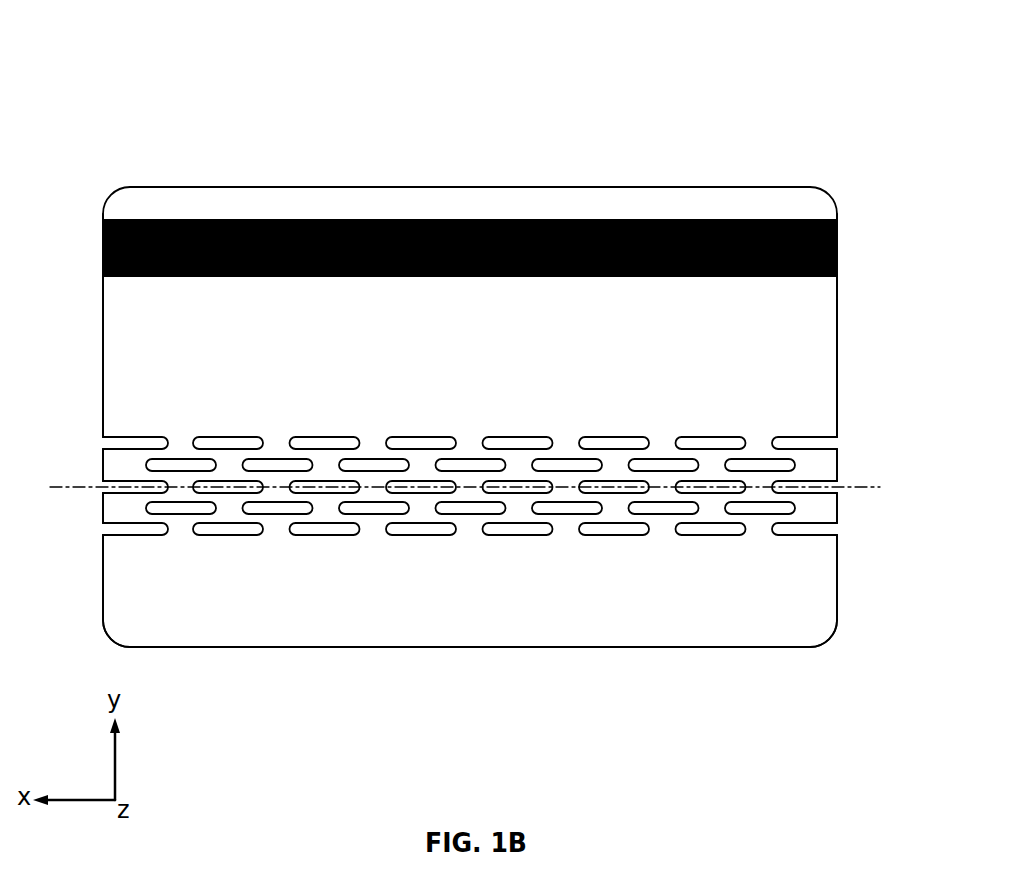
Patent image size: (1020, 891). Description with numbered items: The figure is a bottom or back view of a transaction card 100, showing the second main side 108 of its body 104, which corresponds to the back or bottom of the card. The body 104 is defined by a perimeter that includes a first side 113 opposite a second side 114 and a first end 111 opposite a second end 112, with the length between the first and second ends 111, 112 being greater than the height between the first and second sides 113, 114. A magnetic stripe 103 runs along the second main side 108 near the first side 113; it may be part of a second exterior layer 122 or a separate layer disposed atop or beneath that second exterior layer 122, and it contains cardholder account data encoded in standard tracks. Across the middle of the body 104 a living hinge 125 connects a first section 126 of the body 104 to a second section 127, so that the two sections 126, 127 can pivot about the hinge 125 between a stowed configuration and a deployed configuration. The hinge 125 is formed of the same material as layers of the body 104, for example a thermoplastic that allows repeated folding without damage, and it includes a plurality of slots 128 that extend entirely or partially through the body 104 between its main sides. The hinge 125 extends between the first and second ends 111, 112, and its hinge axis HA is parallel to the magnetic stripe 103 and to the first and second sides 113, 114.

The transaction card 100 is at (141, 84).
The magnetic stripe 103 is at (743, 219).
The body 104 is at (230, 629).
The second main side 108 is at (797, 637).
The first end 111 is at (859, 278).
The second end 112 is at (83, 291).
The first side 113 is at (321, 176).
The second side 114 is at (386, 665).
The second exterior layer 122 is at (537, 313).
The living hinge 125 is at (109, 464).
The first section 126 is at (826, 353).
The second section 127 is at (511, 620).
The slots 128 is at (230, 446).
The hinge axis HA is at (852, 487).